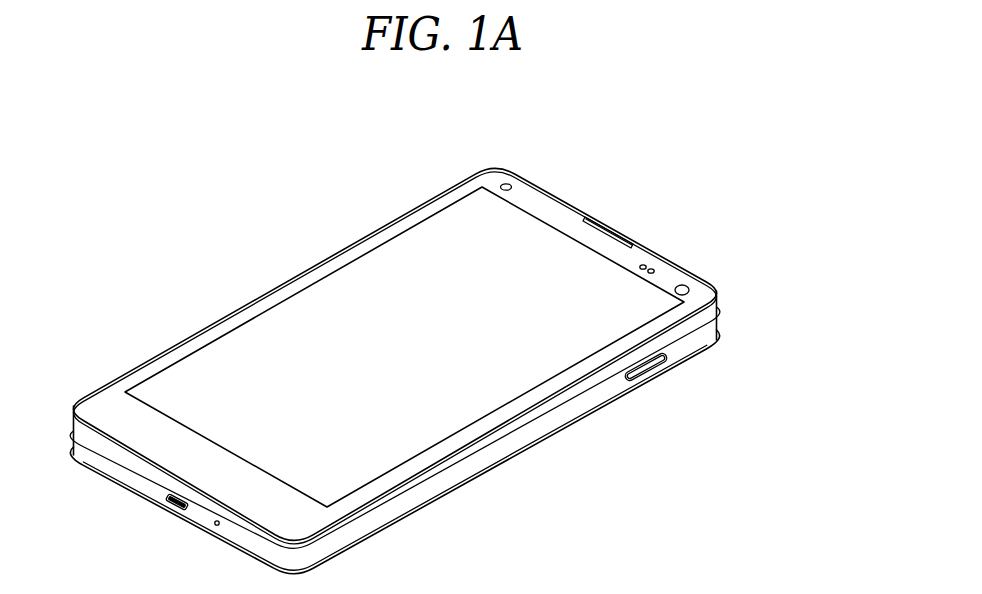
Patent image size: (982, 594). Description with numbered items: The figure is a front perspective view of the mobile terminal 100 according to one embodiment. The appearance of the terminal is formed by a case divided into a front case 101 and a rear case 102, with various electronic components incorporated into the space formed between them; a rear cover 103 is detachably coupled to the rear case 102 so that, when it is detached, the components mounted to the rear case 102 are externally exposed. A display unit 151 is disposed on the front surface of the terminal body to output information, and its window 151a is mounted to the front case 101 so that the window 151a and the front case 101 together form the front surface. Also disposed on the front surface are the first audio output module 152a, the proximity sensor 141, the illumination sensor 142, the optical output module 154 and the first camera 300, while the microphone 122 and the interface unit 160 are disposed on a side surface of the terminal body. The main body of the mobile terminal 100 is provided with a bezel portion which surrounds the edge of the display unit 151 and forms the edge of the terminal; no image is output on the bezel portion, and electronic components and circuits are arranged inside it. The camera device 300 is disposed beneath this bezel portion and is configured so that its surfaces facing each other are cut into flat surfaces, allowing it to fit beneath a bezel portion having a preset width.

The mobile terminal 100 is at (297, 209).
The front case 101 is at (715, 309).
The rear case 102 is at (715, 325).
The rear cover 103 is at (707, 343).
The microphone 122 is at (215, 525).
The proximity sensor 141 is at (689, 282).
The illumination sensor 142 is at (647, 265).
The display unit 151 is at (268, 338).
The window 151a is at (427, 250).
The first audio output module 152a is at (604, 228).
The optical output module 154 is at (508, 183).
The interface unit 160 is at (645, 367).
The first camera 300 is at (688, 285).